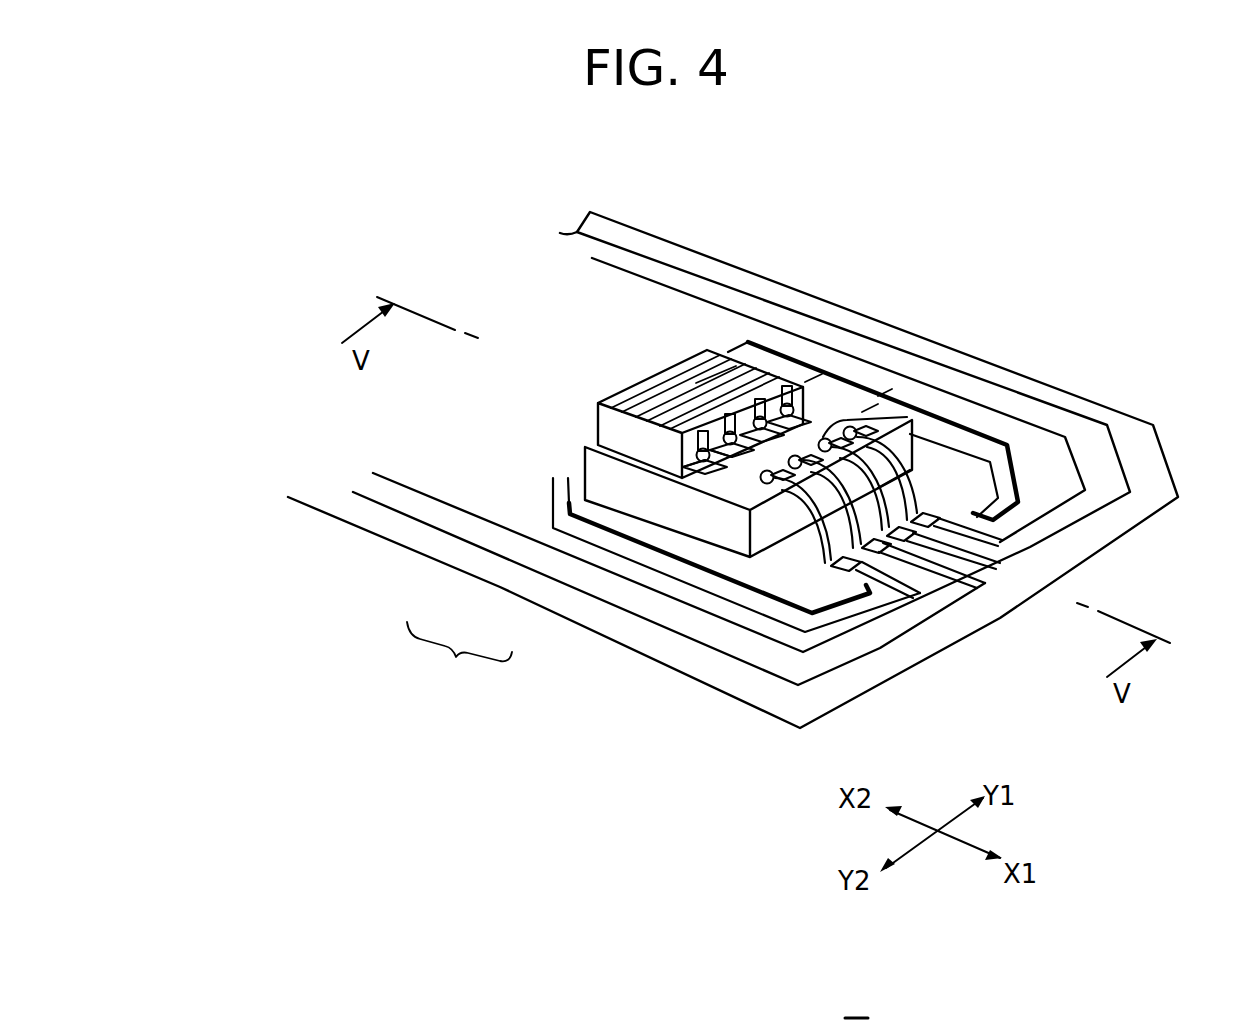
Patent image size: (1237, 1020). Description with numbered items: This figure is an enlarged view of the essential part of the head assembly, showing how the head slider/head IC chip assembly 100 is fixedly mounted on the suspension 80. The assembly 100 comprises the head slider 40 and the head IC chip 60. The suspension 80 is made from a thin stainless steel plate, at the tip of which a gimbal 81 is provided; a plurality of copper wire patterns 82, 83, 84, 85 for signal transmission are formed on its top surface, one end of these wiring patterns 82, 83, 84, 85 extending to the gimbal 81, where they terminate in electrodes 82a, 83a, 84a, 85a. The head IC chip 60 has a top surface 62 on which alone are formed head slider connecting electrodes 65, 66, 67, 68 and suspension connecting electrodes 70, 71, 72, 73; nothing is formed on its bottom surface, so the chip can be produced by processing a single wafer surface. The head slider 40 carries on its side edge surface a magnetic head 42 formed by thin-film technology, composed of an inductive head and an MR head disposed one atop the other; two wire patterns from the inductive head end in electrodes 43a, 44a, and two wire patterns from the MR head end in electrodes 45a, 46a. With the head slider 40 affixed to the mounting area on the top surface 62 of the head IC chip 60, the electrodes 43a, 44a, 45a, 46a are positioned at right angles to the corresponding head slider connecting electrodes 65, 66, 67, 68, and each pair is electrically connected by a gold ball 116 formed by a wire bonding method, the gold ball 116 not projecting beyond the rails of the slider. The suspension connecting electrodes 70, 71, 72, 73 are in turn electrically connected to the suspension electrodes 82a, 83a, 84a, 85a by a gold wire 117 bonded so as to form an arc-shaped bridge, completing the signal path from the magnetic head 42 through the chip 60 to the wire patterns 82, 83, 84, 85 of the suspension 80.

The head slider 40 is at (598, 425).
The magnetic head 42 is at (757, 413).
The electrode 43a is at (795, 403).
The electrode 44a is at (760, 390).
The electrode 45a is at (727, 397).
The electrode 46a is at (643, 403).
The head IC chip 60 is at (597, 497).
The top surface 62 is at (915, 385).
The head slider connecting electrode 65 is at (869, 408).
The head slider connecting electrode 66 is at (883, 392).
The head slider connecting electrode 67 is at (740, 470).
The head slider connecting electrode 68 is at (690, 483).
The suspension connecting electrode 70 is at (913, 490).
The suspension connecting electrode 71 is at (809, 459).
The suspension connecting electrode 72 is at (779, 489).
The suspension connecting electrode 73 is at (741, 479).
The suspension 80 is at (351, 524).
The gimbal 81 is at (683, 550).
The wire pattern 82 is at (614, 263).
The wire pattern 83 is at (658, 258).
The wire pattern 84 is at (387, 478).
The wire pattern 85 is at (357, 490).
The electrode 82a is at (1073, 570).
The electrode 83a is at (1005, 585).
The electrode 84a is at (962, 592).
The electrode 85a is at (853, 580).
The head slider/head IC chip assembly 100 is at (459, 657).
The gold ball 116 is at (815, 378).
The gold wire 117 is at (950, 445).